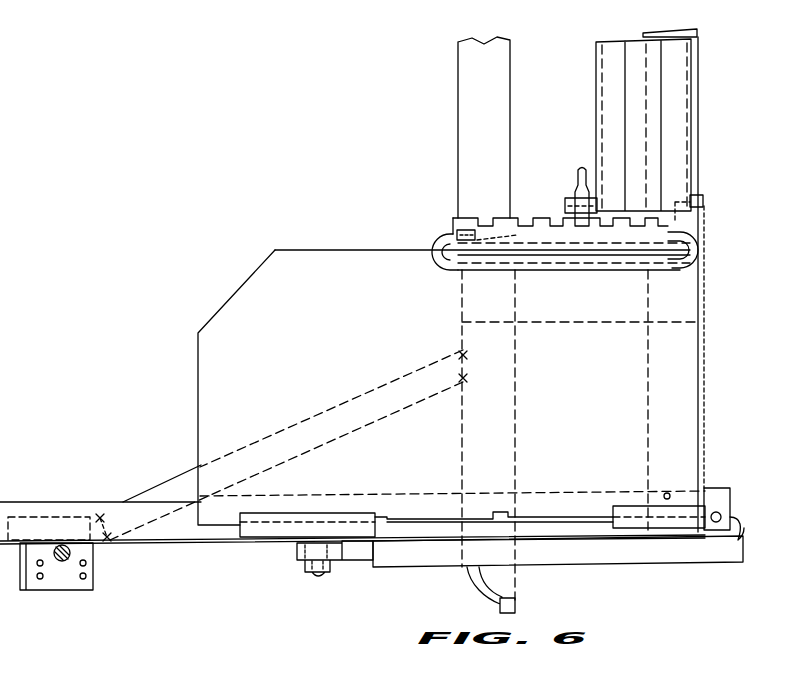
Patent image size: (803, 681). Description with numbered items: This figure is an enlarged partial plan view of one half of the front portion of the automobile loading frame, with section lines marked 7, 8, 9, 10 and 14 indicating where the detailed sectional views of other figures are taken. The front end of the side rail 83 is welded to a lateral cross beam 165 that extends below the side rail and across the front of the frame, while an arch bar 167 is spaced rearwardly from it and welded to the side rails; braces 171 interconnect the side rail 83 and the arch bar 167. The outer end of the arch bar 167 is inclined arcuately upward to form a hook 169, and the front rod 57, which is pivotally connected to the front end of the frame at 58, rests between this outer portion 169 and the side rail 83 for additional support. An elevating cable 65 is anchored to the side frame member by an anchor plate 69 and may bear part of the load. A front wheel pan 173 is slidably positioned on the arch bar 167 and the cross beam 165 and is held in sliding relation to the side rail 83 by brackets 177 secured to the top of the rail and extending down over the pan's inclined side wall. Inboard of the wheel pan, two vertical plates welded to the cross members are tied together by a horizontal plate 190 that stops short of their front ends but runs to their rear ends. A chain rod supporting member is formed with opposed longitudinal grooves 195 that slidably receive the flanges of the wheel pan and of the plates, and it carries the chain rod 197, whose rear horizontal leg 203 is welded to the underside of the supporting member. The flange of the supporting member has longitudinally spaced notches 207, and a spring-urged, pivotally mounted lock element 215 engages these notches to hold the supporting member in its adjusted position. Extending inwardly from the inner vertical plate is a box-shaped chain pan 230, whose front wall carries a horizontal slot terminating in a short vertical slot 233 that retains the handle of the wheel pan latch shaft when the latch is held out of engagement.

The front rod 57 is at (640, 558).
The pivotal connection 58 is at (318, 581).
The elevating cable 65 is at (62, 545).
The anchor plate 69 is at (56, 591).
The side rail 83 is at (160, 536).
The lateral cross beam 165 is at (688, 31).
The arch bar 167 is at (493, 42).
The hook 169 is at (478, 589).
The brace 171 is at (357, 398).
The front wheel pan 173 is at (222, 317).
The bracket 177 is at (352, 512).
The horizontal plate 190 is at (455, 222).
The longitudinal groove 195 is at (556, 248).
The chain rod 197 is at (447, 269).
The horizontal leg 203 is at (513, 242).
The notch 207 is at (558, 218).
The lock element 215 is at (577, 186).
The chain pan 230 is at (676, 56).
The vertical slot 233 is at (738, 533).
The section line 7 is at (748, 328).
The section line 8- 8 is at (562, 458).
The section line 9- 9 is at (505, 194).
The section line 10- 10 is at (612, 154).
The section line 14 is at (722, 190).